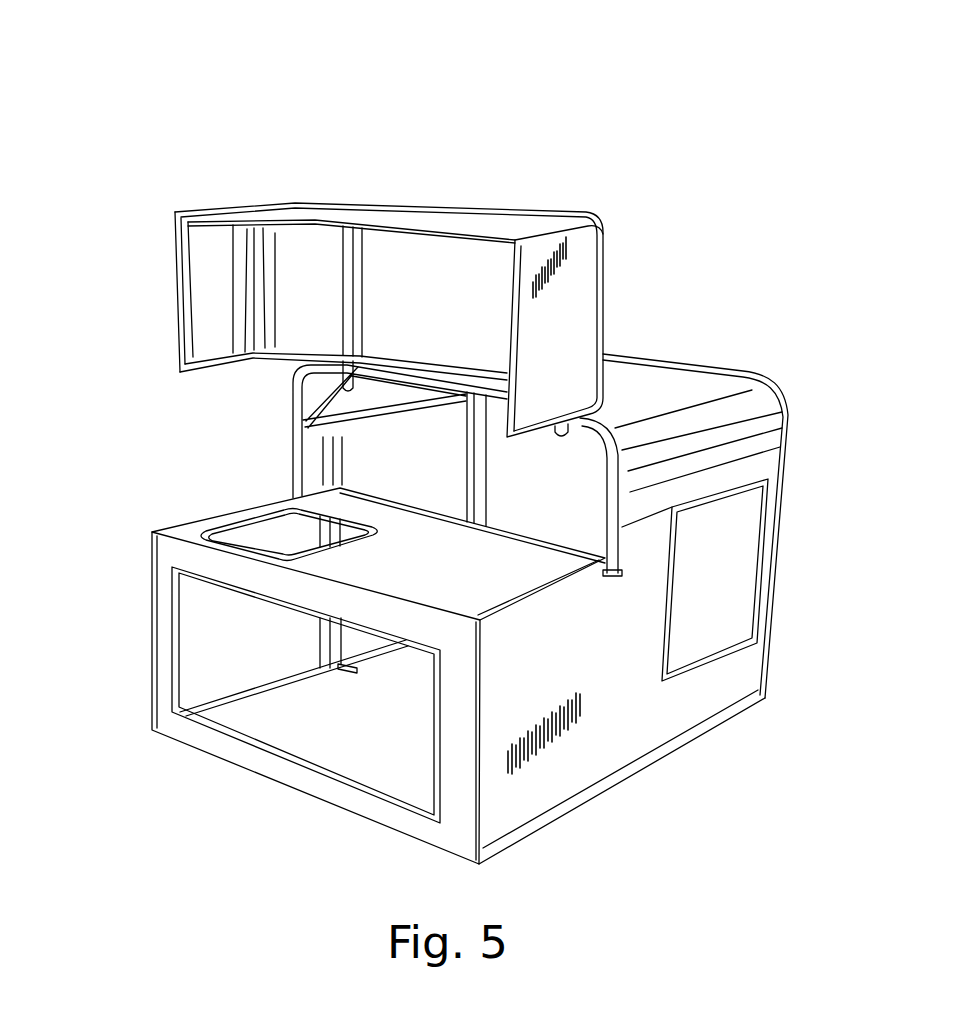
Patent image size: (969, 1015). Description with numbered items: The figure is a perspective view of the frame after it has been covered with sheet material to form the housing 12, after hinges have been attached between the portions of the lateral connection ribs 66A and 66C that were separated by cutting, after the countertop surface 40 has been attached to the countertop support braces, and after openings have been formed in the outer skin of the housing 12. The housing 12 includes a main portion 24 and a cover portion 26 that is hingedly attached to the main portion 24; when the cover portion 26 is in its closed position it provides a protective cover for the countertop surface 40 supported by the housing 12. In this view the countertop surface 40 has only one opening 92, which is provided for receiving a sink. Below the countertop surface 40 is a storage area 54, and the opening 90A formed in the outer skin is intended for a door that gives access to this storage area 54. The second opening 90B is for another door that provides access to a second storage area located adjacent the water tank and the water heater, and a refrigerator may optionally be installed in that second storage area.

The housing 12 is at (419, 77).
The cover portion 26 is at (440, 201).
The lateral connection rib 66A is at (355, 262).
The lateral connection rib 66C is at (568, 434).
The main portion 24 is at (647, 357).
The countertop surface 40 is at (473, 569).
The storage area 54 is at (379, 749).
The opening 90A is at (222, 664).
The opening 90B is at (733, 580).
The opening 92 is at (278, 536).